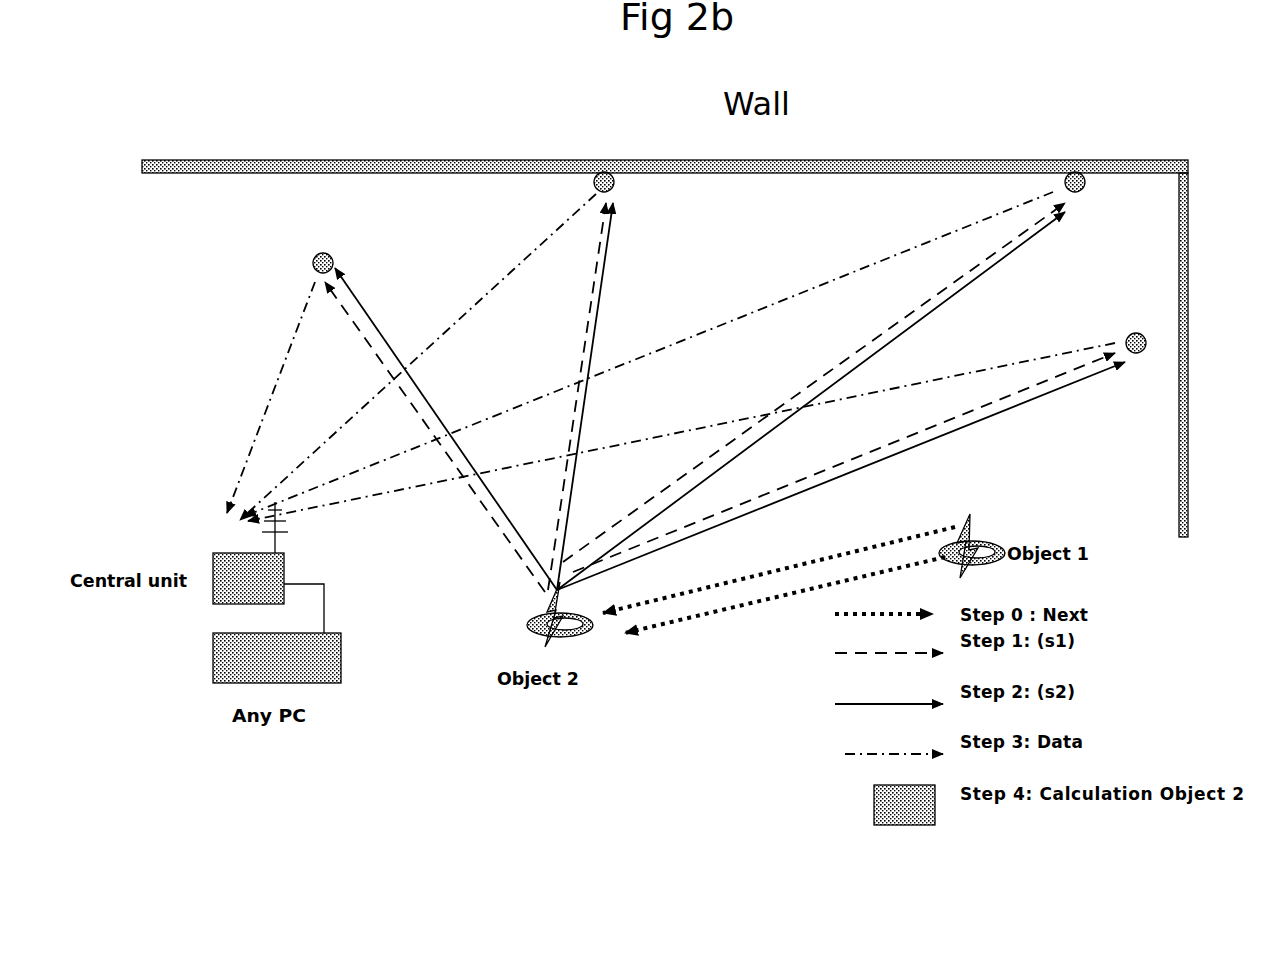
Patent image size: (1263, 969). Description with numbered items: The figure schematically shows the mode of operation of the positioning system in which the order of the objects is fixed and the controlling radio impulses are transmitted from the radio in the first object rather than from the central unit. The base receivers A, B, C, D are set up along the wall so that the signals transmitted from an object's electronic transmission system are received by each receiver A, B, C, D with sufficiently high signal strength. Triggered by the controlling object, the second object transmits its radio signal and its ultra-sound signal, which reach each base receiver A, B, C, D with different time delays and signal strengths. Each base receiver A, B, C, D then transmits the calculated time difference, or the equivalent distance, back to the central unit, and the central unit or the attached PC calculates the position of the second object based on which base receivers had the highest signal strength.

The base receiver A is at (295, 267).
The base receiver B is at (569, 194).
The base receiver C is at (1042, 193).
The base receiver D is at (1154, 355).